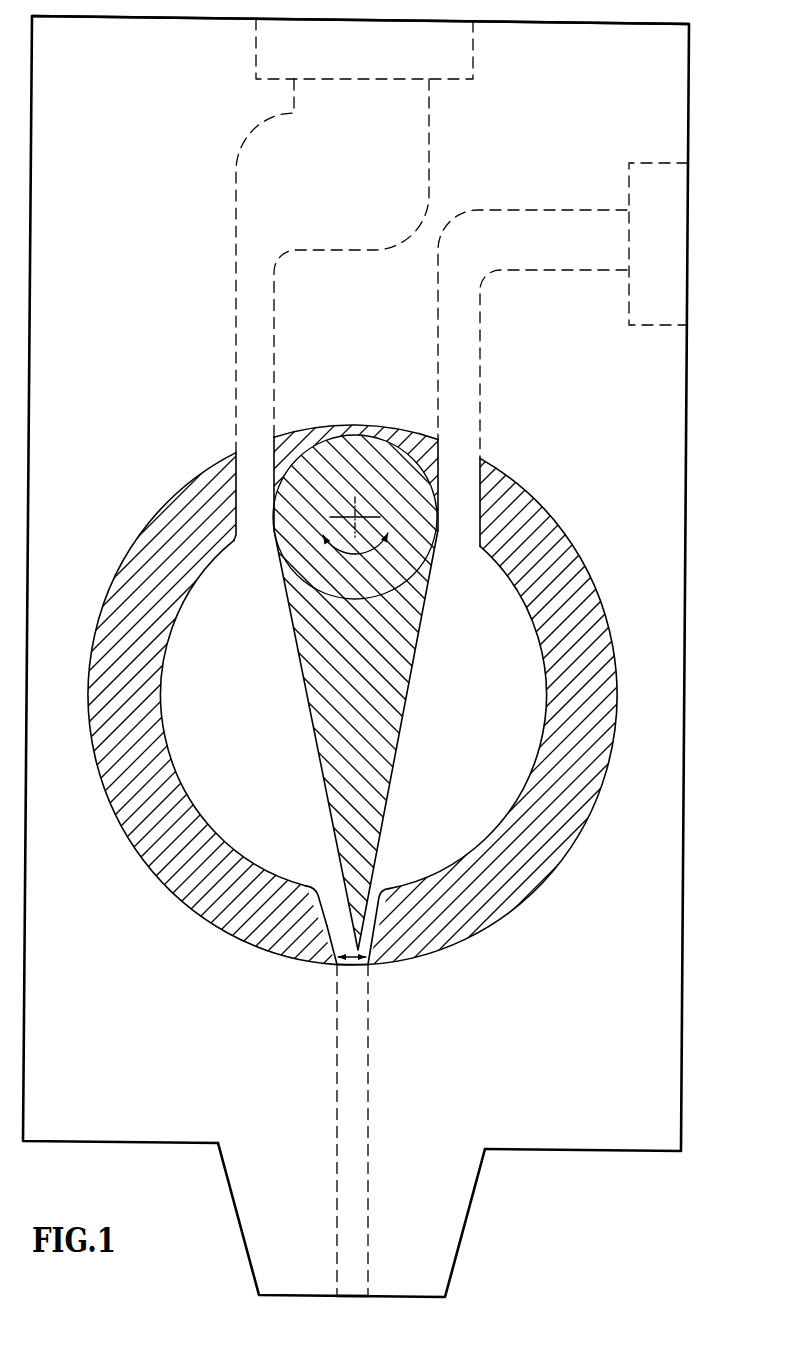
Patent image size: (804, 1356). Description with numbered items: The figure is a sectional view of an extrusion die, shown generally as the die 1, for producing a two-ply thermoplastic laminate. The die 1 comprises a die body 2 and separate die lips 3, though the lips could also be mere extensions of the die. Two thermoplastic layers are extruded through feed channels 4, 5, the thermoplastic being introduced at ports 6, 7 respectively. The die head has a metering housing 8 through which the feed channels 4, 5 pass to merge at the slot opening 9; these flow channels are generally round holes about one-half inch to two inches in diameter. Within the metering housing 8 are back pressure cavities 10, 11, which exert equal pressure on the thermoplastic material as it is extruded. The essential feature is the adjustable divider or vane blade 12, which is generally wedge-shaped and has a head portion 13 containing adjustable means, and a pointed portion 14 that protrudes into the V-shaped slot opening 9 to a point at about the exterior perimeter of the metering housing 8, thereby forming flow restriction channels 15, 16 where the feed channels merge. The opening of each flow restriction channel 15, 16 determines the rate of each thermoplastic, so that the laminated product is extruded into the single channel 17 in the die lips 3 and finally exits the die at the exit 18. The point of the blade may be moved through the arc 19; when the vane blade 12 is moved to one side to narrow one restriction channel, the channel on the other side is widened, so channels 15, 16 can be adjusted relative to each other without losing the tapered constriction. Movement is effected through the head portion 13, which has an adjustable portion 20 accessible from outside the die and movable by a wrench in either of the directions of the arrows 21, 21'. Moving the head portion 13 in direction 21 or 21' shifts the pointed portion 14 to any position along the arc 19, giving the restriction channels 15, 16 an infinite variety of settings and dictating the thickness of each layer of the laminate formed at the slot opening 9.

The die 1 is at (697, 472).
The die body 2 is at (100, 303).
The die lips 3 is at (277, 1193).
The feed channel 4 is at (240, 283).
The feed channel 5 is at (528, 212).
The port 6 is at (466, 51).
The port 7 is at (670, 167).
The metering housing 8 is at (533, 481).
The slot opening 9 is at (350, 970).
The back pressure cavity 10 is at (457, 696).
The back pressure cavity 11 is at (213, 690).
The adjustable divider or vane blade 12 is at (417, 635).
The head portion 13 is at (358, 437).
The pointed portion 14 is at (358, 942).
The flow restriction channel 15 is at (372, 928).
The flow restriction channel 16 is at (330, 946).
The single channel 17 is at (365, 1090).
The die exit 18 is at (357, 1297).
The arc 19 is at (357, 964).
The adjustable portion 20 is at (366, 517).
The arrow 21 is at (386, 550).
The arrow 21' is at (320, 556).